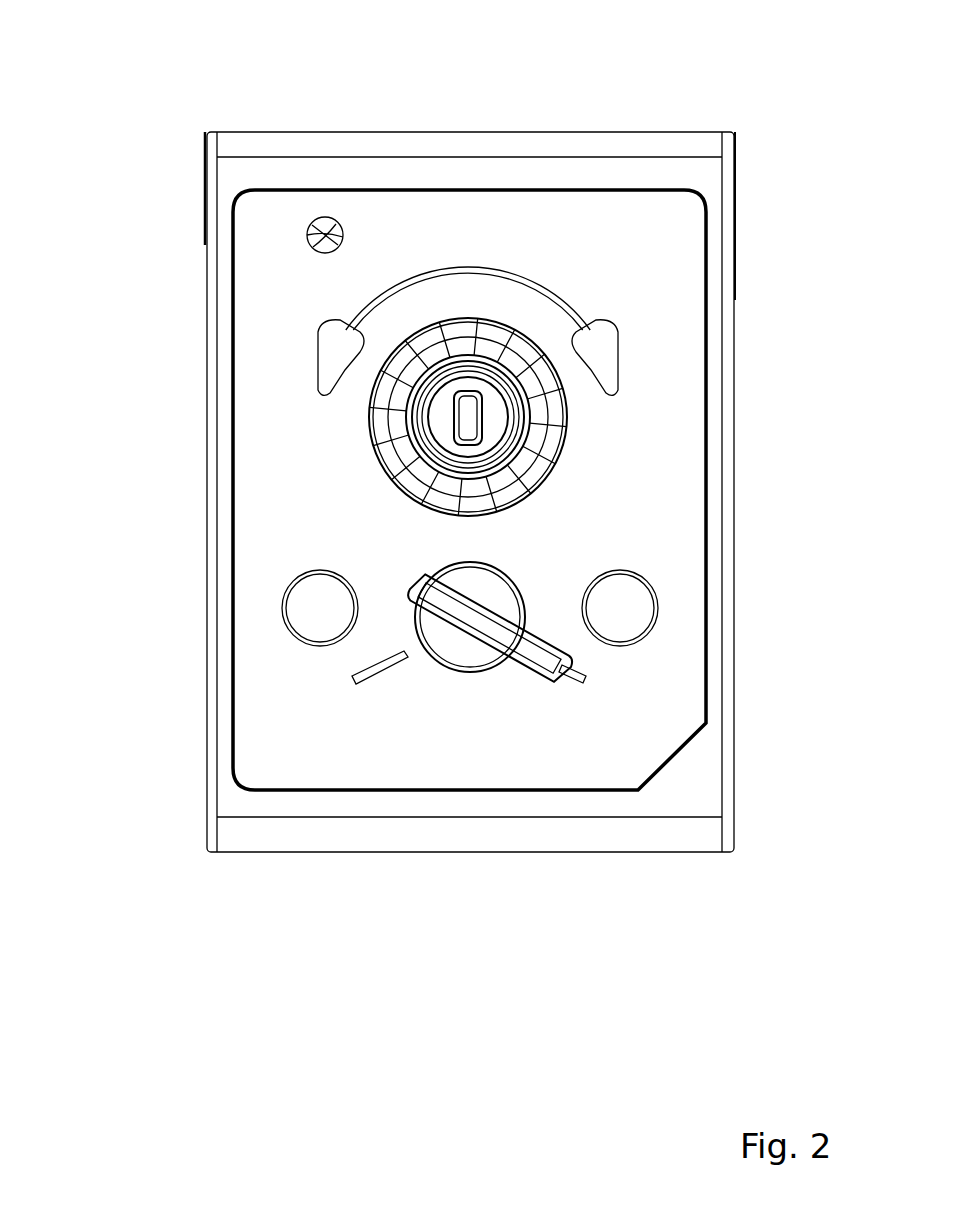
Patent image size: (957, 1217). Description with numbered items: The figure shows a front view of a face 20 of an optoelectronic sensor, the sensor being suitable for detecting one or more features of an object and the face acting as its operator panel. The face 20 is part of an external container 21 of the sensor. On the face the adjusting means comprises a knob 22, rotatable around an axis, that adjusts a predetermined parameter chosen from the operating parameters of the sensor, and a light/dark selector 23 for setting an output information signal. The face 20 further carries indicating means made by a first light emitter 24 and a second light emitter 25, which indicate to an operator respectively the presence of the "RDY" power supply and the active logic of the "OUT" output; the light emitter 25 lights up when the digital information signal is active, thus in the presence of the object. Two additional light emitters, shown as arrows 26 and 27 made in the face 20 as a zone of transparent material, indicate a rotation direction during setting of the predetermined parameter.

The face 20 is at (268, 314).
The external container 21 is at (258, 132).
The knob 22 is at (560, 415).
The light/dark selector 23 is at (494, 573).
The first light emitter 24 is at (622, 603).
The second light emitter 25 is at (308, 611).
The arrow 26 is at (605, 360).
The arrow 27 is at (330, 356).